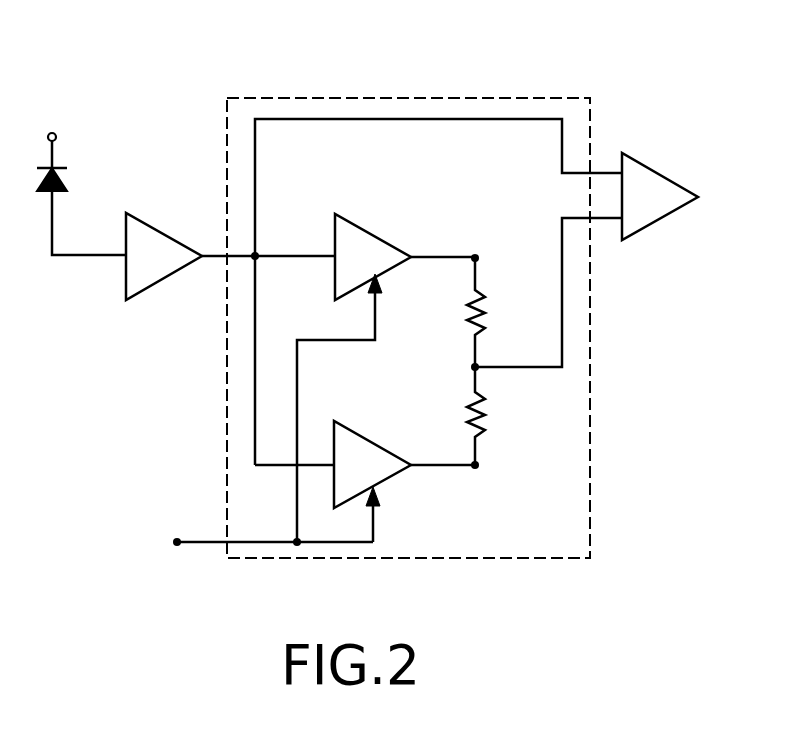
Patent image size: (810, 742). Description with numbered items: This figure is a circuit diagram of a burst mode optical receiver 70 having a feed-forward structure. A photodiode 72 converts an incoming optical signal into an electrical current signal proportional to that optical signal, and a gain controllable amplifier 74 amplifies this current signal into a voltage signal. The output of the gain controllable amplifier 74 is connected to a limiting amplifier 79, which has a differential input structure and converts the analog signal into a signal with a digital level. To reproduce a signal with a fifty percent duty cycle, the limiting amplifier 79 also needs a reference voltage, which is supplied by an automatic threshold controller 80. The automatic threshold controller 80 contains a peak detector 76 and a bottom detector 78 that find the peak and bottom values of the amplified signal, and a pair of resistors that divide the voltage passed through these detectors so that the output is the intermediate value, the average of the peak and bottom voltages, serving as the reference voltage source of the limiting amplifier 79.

The burst mode optical receiver 70 is at (583, 80).
The photodiode 72 is at (64, 181).
The gain controllable amplifier 74 is at (160, 229).
The peak detector 76 is at (376, 237).
The bottom detector 78 is at (375, 443).
The limiting amplifier 79 is at (663, 174).
The automatic threshold controller 80 is at (411, 97).